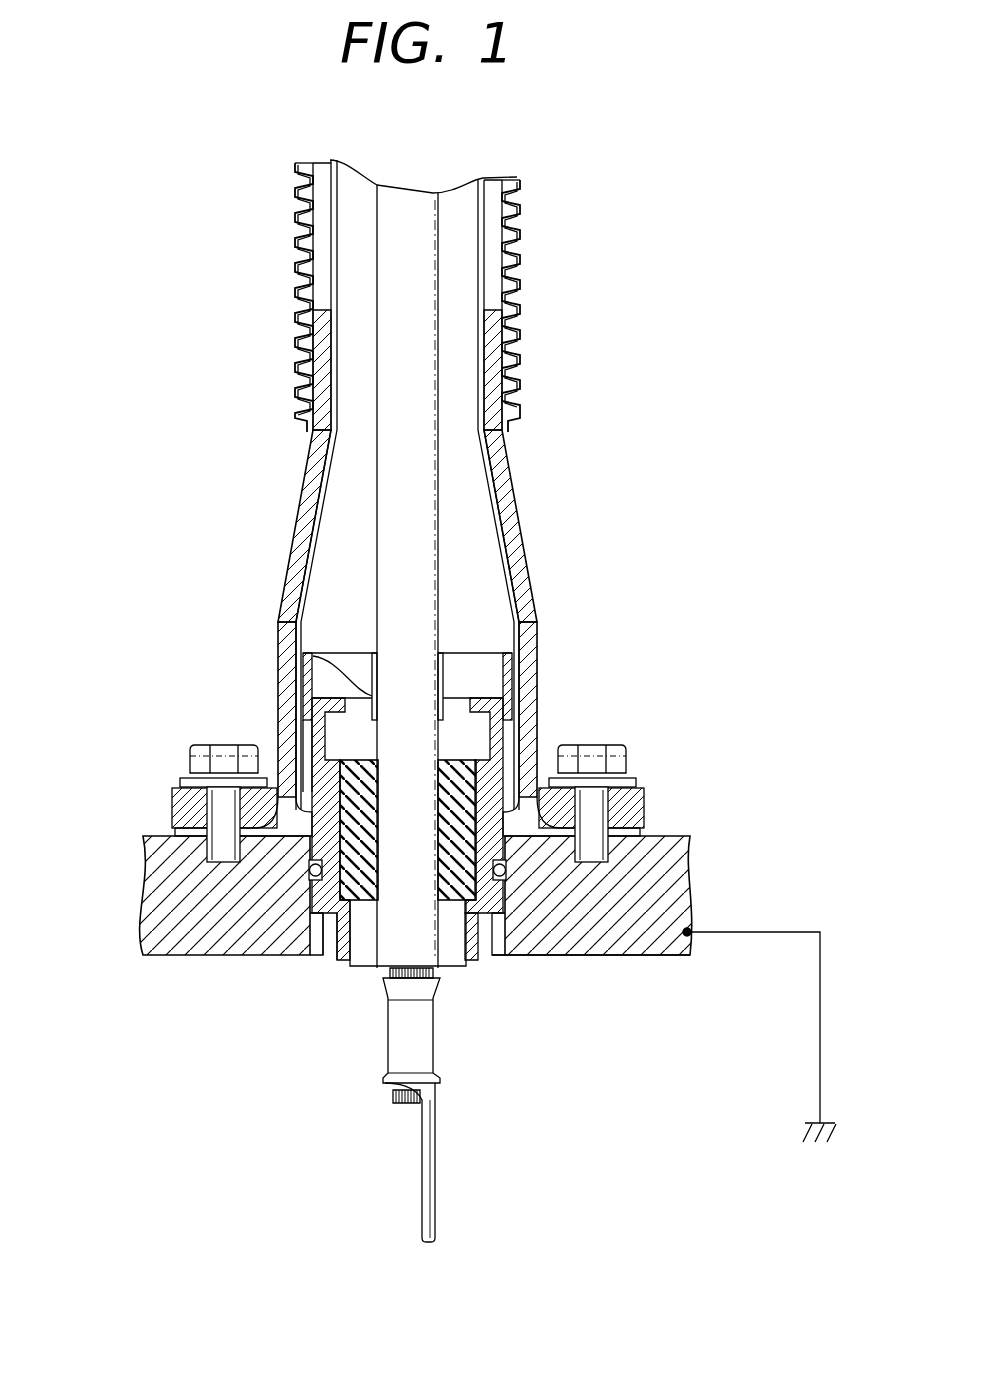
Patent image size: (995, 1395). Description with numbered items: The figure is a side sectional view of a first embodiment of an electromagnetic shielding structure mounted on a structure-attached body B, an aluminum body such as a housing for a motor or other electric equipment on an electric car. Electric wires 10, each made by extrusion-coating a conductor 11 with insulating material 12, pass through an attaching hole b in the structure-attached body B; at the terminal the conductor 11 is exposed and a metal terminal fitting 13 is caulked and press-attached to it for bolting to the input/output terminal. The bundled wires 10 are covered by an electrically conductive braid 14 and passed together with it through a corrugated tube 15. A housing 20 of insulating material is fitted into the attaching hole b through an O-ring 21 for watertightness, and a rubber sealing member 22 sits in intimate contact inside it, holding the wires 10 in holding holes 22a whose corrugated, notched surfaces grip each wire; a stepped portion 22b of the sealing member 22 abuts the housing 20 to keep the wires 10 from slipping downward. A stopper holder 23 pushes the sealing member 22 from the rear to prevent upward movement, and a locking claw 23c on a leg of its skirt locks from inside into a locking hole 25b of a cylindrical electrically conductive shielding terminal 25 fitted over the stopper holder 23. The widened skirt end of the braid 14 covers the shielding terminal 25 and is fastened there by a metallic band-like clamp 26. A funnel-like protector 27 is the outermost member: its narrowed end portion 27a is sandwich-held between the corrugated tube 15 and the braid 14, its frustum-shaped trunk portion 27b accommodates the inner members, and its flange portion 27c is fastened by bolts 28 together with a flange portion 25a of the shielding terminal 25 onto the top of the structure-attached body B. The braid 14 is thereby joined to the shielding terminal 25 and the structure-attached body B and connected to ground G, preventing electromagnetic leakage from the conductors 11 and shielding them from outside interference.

The electric wire 10 is at (451, 426).
The conductor 11 is at (393, 1098).
The insulating material 12 is at (428, 357).
The metal terminal fitting 13 is at (430, 1055).
The electrically conductive braid 14 is at (300, 580).
The corrugated tube 15 is at (522, 245).
The housing 20 is at (330, 925).
The O-ring 21 is at (298, 890).
The rubber sealing member 22 is at (505, 770).
The holding hole 22a is at (402, 875).
The stepped portion 22b is at (482, 948).
The stopper holder 23 is at (527, 700).
The locking claw 23c is at (300, 885).
The shielding terminal 25 is at (308, 690).
The flange portion 25a is at (185, 832).
The locking hole 25b is at (290, 772).
The clamp 26 is at (308, 660).
The protector 27 is at (357, 499).
The narrowed end portion 27a is at (300, 355).
The trunk portion 27b is at (318, 460).
The flange portion 27c is at (278, 822).
The bolt 28 is at (212, 752).
The structure-attached body B is at (690, 876).
The attaching hole b is at (500, 958).
The ground G is at (778, 1035).